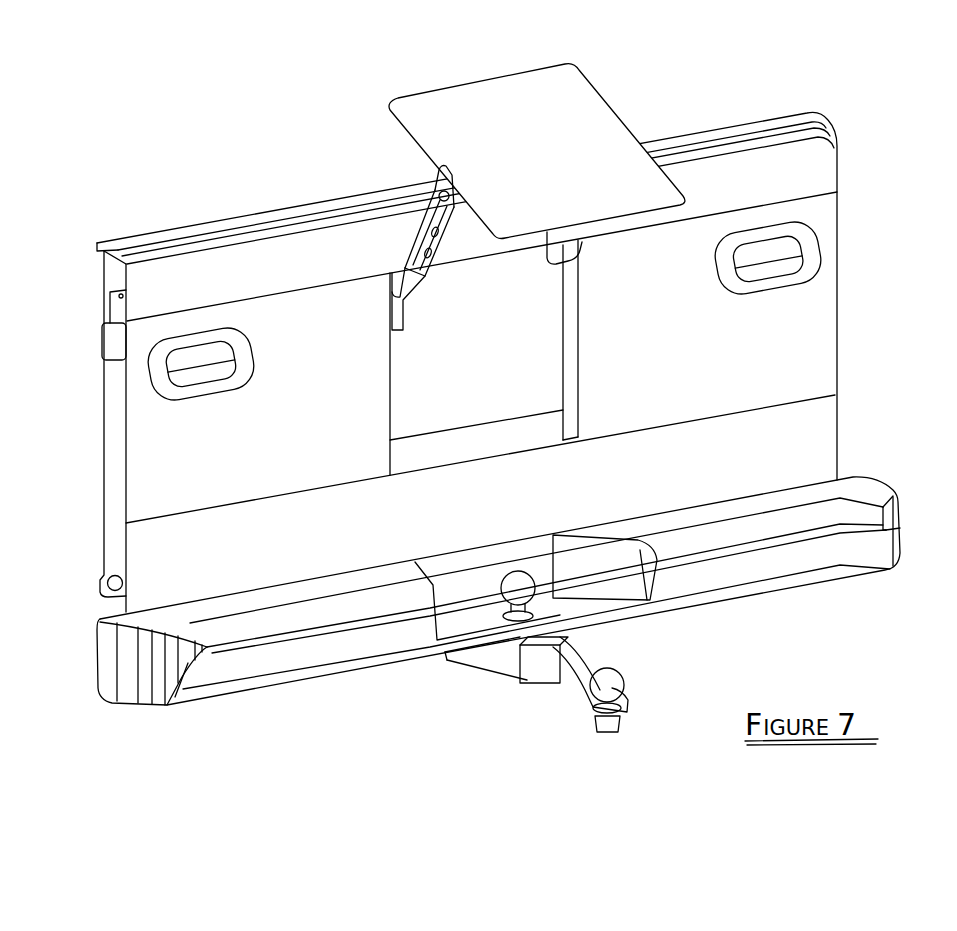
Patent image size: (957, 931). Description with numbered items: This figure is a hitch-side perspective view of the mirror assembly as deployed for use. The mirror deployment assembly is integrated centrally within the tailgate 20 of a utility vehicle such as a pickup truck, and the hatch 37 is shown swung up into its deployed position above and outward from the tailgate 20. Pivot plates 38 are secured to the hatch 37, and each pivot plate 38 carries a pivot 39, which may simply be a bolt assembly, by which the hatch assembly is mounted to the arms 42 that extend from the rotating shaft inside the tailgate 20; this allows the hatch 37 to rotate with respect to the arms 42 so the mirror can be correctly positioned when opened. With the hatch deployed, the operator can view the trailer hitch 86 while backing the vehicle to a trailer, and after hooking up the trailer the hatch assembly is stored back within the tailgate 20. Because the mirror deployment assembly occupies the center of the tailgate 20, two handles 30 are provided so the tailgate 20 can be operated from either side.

The tailgate 20 is at (810, 163).
The handle 30 is at (190, 350).
The hatch 37 is at (568, 90).
The pivot plate 38 is at (443, 170).
The pivot 39 is at (447, 193).
The arm 42 is at (594, 244).
The trailer hitch 86 is at (490, 587).